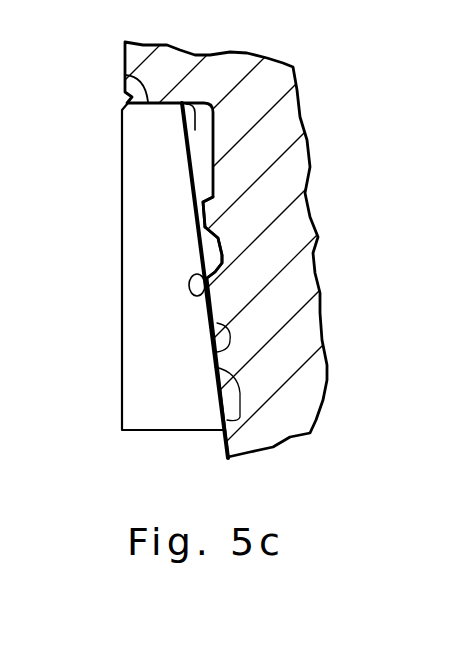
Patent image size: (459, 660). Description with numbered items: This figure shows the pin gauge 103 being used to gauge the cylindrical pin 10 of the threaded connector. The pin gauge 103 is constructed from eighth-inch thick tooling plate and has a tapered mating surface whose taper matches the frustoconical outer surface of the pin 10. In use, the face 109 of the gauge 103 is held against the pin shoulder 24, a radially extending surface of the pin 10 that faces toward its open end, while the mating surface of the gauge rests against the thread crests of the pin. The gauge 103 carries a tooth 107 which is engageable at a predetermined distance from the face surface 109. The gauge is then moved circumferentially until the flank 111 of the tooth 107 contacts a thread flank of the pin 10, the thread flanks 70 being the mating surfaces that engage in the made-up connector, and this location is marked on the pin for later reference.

The cylindrical pin 10 is at (310, 382).
The shoulder 24 is at (182, 123).
The flanks 70 is at (222, 272).
The pin gauge 103 is at (143, 290).
The tooth 107 is at (208, 272).
The face surface 109 is at (125, 75).
The flank 111 is at (197, 290).